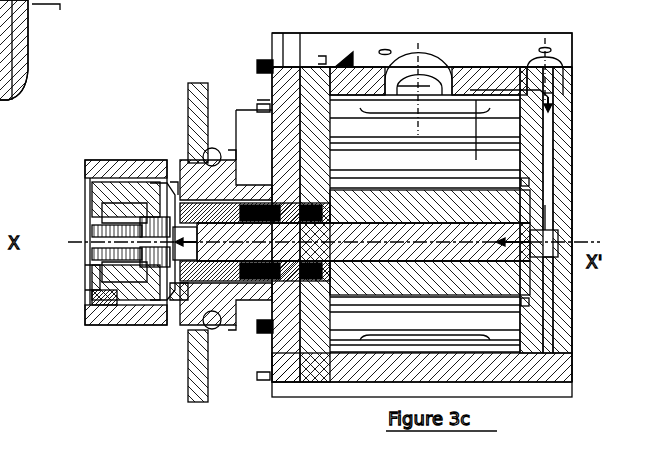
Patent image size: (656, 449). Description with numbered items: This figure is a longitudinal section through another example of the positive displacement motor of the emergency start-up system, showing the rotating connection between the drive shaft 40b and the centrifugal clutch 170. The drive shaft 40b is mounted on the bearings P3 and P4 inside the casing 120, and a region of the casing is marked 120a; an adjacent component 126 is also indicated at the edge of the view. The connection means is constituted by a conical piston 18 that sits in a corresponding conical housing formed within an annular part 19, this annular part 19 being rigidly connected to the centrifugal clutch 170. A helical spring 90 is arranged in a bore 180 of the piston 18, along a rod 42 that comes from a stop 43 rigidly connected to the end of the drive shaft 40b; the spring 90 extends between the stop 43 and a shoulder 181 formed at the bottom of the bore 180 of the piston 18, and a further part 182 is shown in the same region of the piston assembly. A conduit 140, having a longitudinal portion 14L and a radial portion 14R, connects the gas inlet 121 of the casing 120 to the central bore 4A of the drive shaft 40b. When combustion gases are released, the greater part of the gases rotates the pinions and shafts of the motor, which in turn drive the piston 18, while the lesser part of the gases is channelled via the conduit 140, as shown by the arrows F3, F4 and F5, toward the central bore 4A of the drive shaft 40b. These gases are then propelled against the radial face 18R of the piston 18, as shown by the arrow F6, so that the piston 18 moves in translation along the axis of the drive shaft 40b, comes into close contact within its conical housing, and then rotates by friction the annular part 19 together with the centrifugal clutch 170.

The adjacent component 126 is at (0, 118).
The casing 120 is at (560, 312).
The housing cavity 120a is at (266, 182).
The gas inlet 121 is at (437, 60).
The central bore 4A is at (527, 33).
The arrow F3 is at (420, 66).
The arrow F4 is at (538, 88).
The arrow F5 is at (548, 215).
The arrow F6 is at (184, 190).
The longitudinal portion 14L is at (472, 160).
The radial portion 14R is at (550, 180).
The conduit 140 is at (583, 140).
The drive shaft 40b is at (360, 227).
The bearing P3 is at (212, 167).
The bearing P4 is at (265, 283).
The centrifugal clutch 170 is at (97, 162).
The bore 180 is at (140, 182).
The annular part 19 is at (150, 205).
The rod 42 is at (88, 230).
The stop 43 is at (83, 255).
The helical spring 90 is at (85, 288).
The retainer 182 is at (92, 308).
The shoulder 181 is at (130, 277).
The conical piston 18 is at (168, 268).
The radial face 18R is at (180, 300).